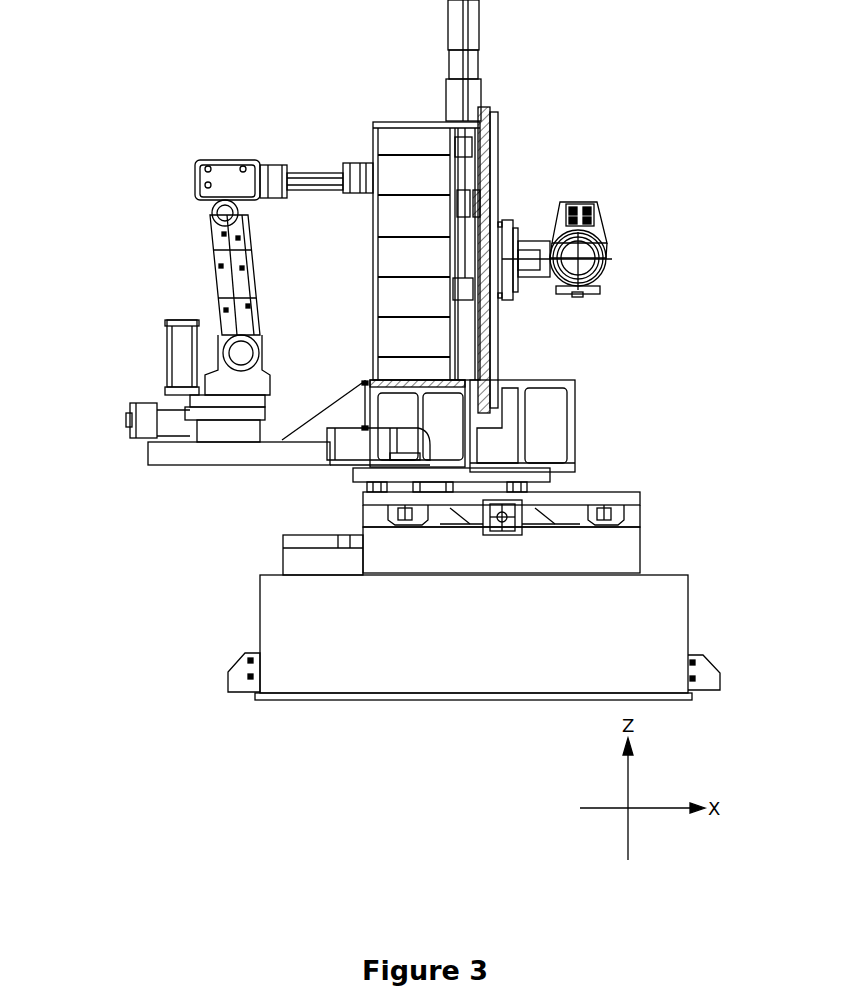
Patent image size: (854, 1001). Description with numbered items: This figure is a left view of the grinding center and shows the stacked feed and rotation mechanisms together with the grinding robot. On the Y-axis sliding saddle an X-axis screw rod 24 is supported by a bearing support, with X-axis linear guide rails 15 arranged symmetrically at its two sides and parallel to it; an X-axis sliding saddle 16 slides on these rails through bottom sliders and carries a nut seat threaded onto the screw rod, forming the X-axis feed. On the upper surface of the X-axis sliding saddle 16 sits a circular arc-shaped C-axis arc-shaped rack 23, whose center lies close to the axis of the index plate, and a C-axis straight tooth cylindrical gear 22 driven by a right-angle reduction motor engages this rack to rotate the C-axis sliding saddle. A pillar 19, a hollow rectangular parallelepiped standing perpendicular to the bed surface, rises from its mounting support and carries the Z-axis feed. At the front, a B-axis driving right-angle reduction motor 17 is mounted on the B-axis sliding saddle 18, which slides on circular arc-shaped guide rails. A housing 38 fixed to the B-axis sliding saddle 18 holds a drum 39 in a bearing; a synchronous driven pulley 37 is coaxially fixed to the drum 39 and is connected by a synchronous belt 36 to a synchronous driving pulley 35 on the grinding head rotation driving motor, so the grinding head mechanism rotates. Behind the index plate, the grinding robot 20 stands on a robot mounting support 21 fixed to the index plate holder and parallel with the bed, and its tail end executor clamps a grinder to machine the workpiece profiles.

The X-axis linear guide rail 15 is at (610, 518).
The X-axis sliding saddle 16 is at (593, 500).
The B-axis driving right-angle reduction motor 17 is at (526, 268).
The B-axis sliding saddle 18 is at (507, 235).
The pillar 19 is at (393, 150).
The grinding robot 20 is at (215, 267).
The robot mounting support 21 is at (192, 456).
The C-axis straight tooth cylindrical gear 22 is at (378, 510).
The C-axis arc-shaped rack 23 is at (430, 430).
The X-axis screw rod 24 is at (507, 524).
The synchronous driving pulley 35 is at (592, 206).
The synchronous belt 36 is at (600, 224).
The synchronous driven pulley 37 is at (608, 256).
The housing 38 is at (606, 279).
The drum 39 is at (600, 290).